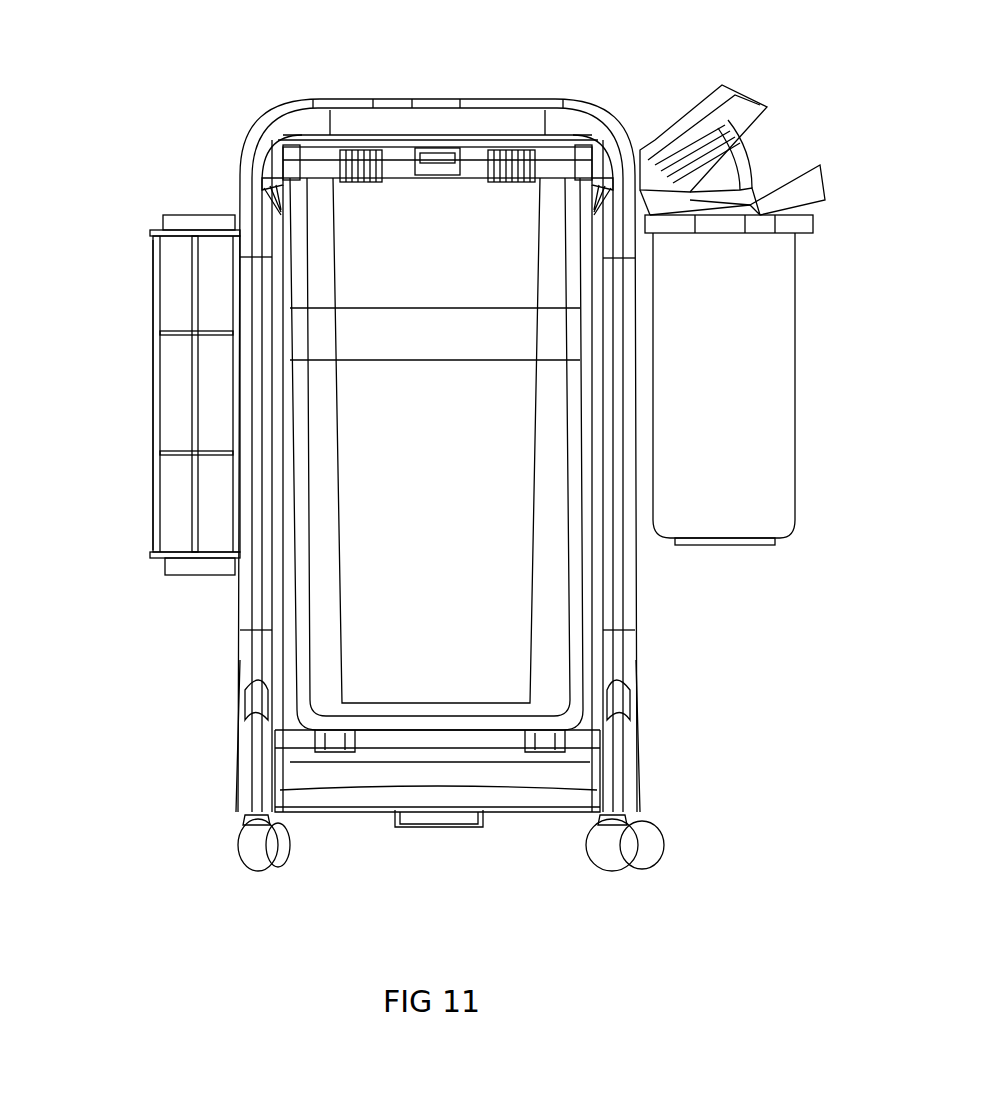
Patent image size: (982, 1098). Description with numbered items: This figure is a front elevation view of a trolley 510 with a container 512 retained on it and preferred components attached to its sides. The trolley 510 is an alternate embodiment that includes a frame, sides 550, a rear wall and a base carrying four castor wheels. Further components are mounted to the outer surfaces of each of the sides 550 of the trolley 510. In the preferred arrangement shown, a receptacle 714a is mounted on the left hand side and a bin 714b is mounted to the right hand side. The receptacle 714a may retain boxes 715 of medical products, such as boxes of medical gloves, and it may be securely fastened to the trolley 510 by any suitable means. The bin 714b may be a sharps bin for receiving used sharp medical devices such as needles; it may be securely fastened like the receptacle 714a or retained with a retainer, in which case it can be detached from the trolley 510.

The trolley 510 is at (576, 108).
The container 512 is at (432, 120).
The sides 550 is at (257, 592).
The receptacle 714a is at (150, 230).
The bin 714b is at (757, 407).
The boxes 715 is at (177, 493).